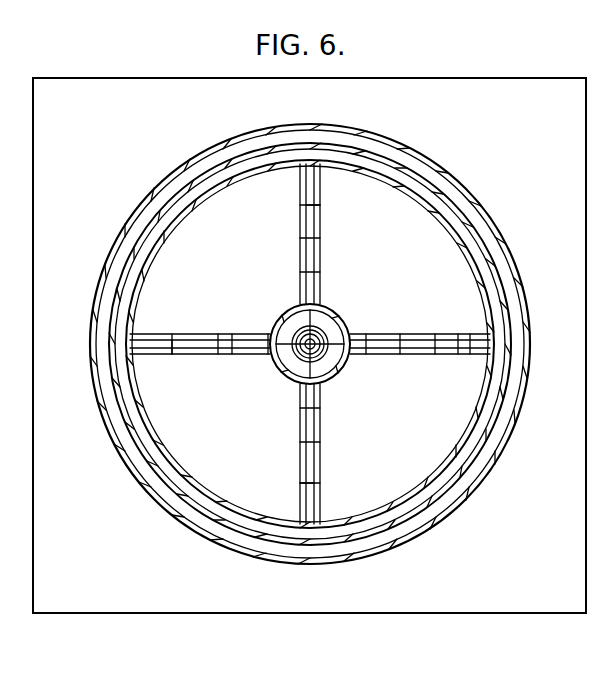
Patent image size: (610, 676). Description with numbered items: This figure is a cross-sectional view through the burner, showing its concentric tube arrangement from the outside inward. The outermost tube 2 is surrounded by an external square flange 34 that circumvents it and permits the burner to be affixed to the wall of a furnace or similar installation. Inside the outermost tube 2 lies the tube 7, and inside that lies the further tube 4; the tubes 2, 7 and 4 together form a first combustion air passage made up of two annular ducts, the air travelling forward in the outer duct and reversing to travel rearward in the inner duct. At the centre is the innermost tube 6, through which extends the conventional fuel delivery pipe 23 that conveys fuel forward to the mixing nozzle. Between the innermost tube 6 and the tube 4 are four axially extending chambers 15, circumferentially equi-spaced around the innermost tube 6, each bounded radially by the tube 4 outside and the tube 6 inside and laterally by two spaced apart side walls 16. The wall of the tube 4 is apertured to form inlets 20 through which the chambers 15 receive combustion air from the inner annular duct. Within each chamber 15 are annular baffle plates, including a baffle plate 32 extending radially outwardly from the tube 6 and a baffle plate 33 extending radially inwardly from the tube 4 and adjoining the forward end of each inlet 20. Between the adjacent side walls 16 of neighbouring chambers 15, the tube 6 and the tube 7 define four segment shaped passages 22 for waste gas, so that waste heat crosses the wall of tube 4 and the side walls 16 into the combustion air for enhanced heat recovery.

The outermost tube 2 is at (473, 197).
The further tube 4 is at (370, 136).
The innermost tube 6 is at (335, 318).
The tube 7 is at (402, 160).
The chamber 15 is at (300, 205).
The side wall 16 is at (300, 238).
The inlet 20 is at (306, 165).
The segment shaped passage 22 is at (408, 203).
The fuel delivery pipe 23 is at (293, 320).
The baffle plate 32 is at (320, 272).
The baffle plate 33 is at (320, 205).
The external square flange 34 is at (442, 90).